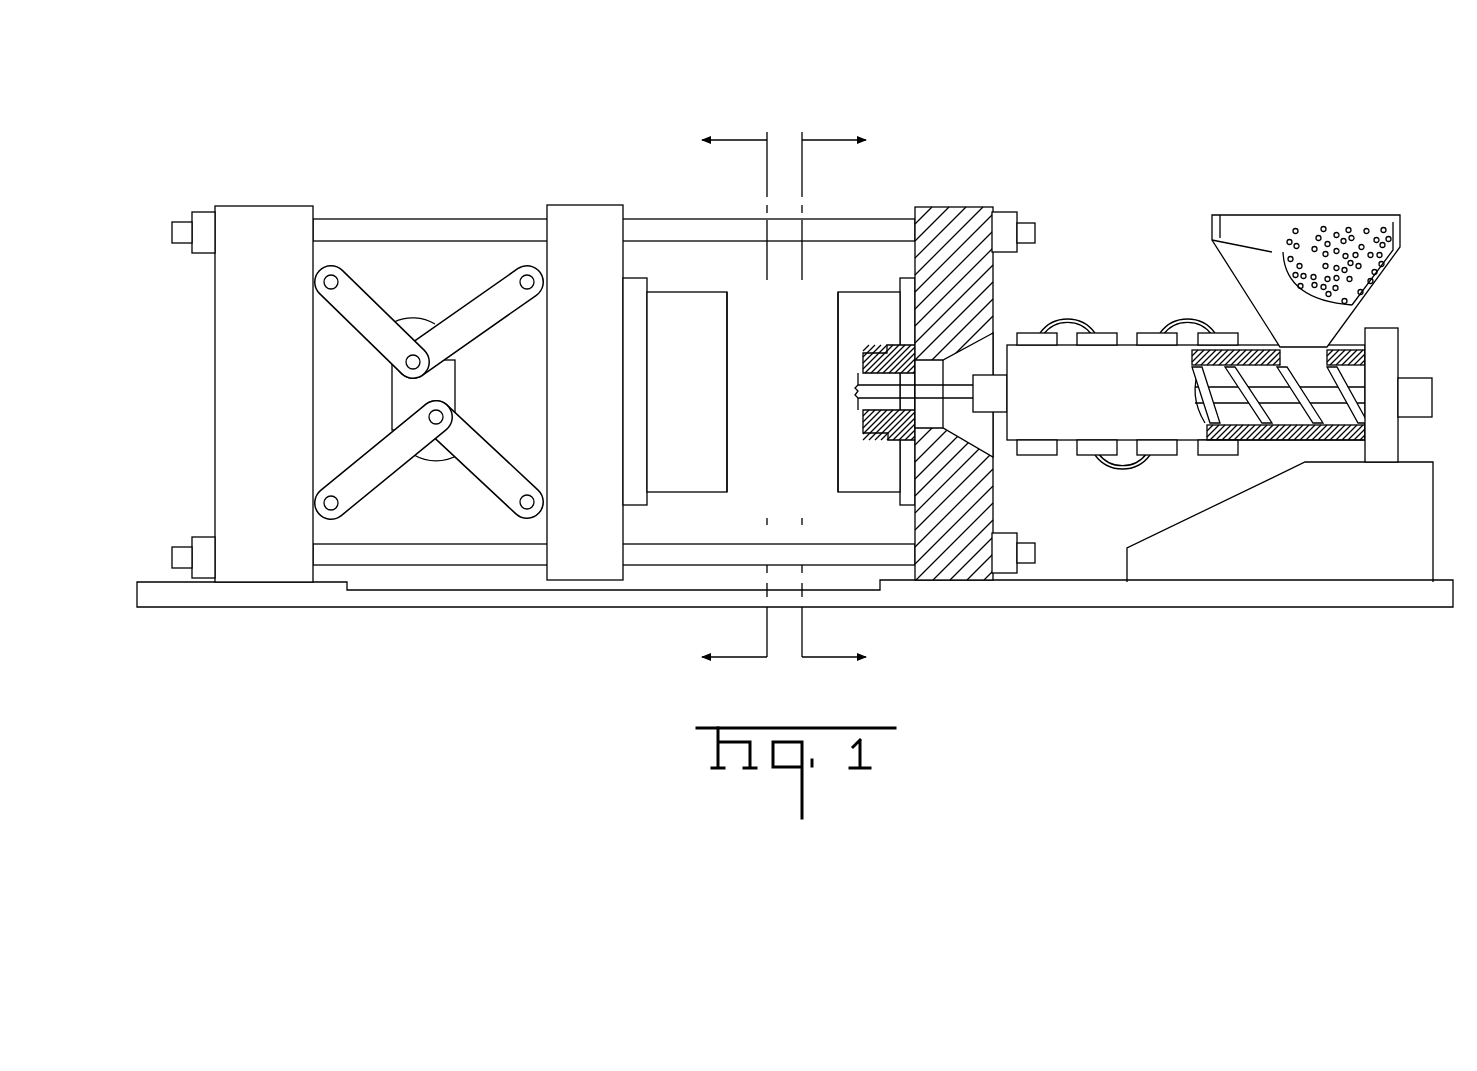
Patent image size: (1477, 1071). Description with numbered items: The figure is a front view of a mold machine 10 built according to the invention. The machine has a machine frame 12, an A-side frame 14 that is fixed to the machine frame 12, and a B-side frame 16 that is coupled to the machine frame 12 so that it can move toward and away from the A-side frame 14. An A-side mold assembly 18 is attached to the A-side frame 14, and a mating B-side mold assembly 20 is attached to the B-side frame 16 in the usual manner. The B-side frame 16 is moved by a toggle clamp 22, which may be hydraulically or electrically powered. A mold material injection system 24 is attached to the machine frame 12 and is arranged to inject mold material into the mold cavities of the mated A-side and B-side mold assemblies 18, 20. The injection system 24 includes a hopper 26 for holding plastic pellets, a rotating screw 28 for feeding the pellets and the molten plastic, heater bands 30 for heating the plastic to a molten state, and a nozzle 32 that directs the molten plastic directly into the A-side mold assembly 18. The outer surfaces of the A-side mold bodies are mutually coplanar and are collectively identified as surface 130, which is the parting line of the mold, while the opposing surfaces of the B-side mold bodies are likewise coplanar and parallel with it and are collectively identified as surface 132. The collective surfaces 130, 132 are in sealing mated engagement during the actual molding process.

The mold machine 10 is at (800, 380).
The machine frame 12 is at (1110, 595).
The A-side frame 14 is at (952, 215).
The B-side frame 16 is at (570, 205).
The A-side mold assembly 18 is at (857, 290).
The B-side mold assembly 20 is at (682, 290).
The toggle clamp 22 is at (423, 320).
The mold material injection system 24 is at (1400, 326).
The hopper 26 is at (1292, 213).
The rotating screw 28 is at (1340, 380).
The heater bands 30 is at (1145, 333).
The nozzle 32 is at (960, 395).
The collective surface of A-side mold bodies 130 is at (837, 418).
The collective surface of B-side mold bodies 132 is at (727, 410).